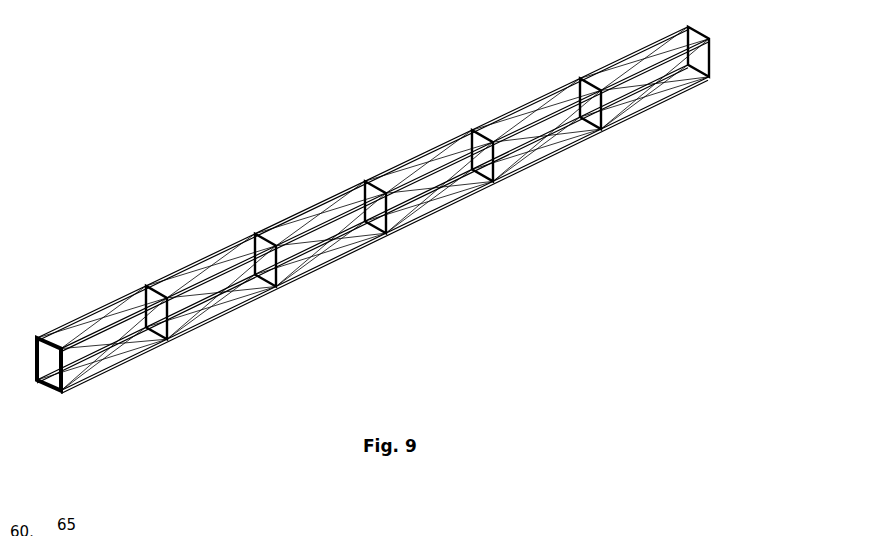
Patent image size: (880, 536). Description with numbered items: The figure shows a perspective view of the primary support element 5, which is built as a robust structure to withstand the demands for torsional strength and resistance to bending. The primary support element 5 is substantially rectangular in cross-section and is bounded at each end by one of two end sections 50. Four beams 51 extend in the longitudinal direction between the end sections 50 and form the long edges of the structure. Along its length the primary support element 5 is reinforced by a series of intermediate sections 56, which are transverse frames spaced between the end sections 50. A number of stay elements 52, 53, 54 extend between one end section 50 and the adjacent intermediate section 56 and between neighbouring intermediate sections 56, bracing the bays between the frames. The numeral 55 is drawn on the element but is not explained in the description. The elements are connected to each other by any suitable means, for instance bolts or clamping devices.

The primary support element 5 is at (219, 221).
The end section 50 is at (49, 392).
The beam 51 is at (442, 212).
The stay element 52 is at (322, 258).
The stay element 53 is at (365, 242).
The stay element 54 is at (318, 217).
The upper longitudinal member 55 is at (291, 226).
The intermediate section 56 is at (283, 285).